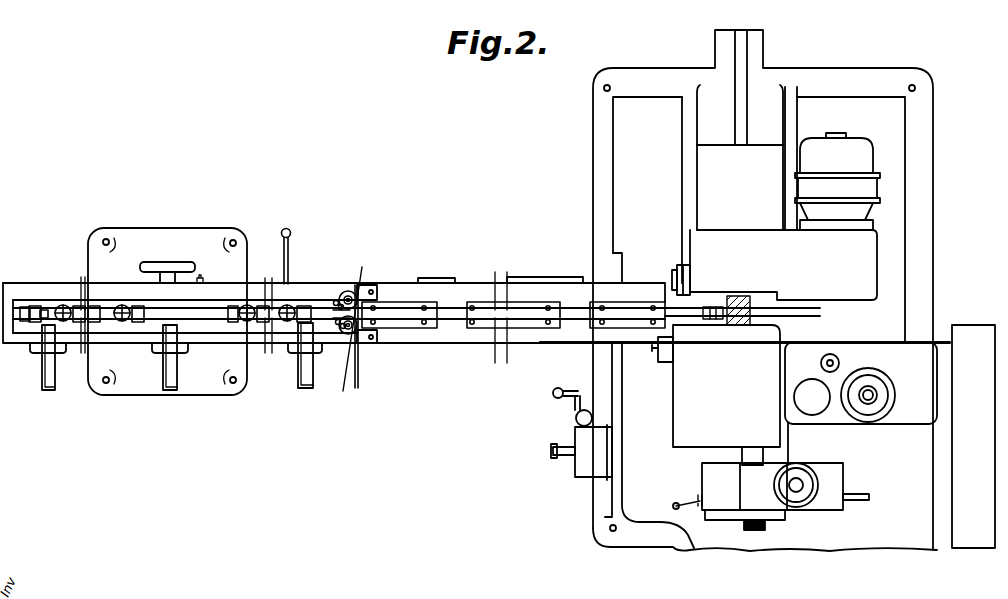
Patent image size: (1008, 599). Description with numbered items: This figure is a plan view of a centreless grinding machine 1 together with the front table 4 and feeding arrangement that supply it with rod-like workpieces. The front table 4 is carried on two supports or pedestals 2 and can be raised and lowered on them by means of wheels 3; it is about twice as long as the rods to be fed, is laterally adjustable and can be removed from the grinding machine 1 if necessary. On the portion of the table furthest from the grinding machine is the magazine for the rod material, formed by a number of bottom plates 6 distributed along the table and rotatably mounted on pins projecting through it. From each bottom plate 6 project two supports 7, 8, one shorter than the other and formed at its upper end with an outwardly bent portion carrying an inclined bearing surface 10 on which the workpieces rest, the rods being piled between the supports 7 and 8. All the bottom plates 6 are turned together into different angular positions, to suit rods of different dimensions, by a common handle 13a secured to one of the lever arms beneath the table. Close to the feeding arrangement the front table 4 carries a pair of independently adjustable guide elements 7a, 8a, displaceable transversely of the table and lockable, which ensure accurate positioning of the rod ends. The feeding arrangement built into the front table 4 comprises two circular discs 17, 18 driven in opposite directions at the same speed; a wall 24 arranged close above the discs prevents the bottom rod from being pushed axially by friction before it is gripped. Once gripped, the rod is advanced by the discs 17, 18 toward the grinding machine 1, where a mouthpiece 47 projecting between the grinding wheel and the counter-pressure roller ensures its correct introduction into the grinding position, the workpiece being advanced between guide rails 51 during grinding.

The circular grinding machine 1 is at (869, 267).
The supports or pedestals 2 is at (213, 388).
The wheels 3 is at (176, 262).
The front table 4 is at (24, 283).
The bottom plates 6 is at (66, 321).
The support 7 is at (60, 314).
The support 8 is at (64, 308).
The guide element 7a is at (337, 302).
The guide element 8a is at (339, 326).
The inclined bearing surface 10 is at (47, 378).
The common handle 13a is at (292, 231).
The circular disc 17 is at (356, 292).
The circular disc 18 is at (347, 344).
The wall 24 is at (360, 381).
The mouthpiece 47 is at (715, 321).
The guide rails 51 is at (510, 308).